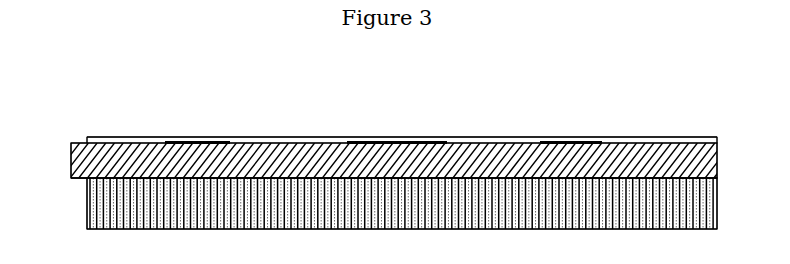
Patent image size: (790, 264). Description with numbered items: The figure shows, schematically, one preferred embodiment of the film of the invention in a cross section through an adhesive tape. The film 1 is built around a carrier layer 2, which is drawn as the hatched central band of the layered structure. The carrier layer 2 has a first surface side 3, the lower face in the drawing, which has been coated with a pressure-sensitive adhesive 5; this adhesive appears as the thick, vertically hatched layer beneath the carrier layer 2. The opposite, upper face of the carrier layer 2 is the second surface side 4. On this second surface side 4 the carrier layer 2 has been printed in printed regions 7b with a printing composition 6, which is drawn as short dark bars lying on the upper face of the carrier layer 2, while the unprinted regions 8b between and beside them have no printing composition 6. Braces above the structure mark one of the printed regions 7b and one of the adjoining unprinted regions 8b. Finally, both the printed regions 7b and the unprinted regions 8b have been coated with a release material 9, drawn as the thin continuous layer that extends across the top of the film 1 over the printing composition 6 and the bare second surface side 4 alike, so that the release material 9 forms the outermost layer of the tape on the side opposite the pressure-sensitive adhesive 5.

The film 1 is at (97, 105).
The carrier layer 2 is at (70, 160).
The first surface side 3 is at (72, 178).
The second surface side 4 is at (72, 143).
The pressure-sensitive adhesive 5 is at (88, 207).
The printing composition 6 is at (195, 142).
The printed regions 7b is at (347, 118).
The unprinted regions 8b is at (447, 118).
The release material 9 is at (290, 140).